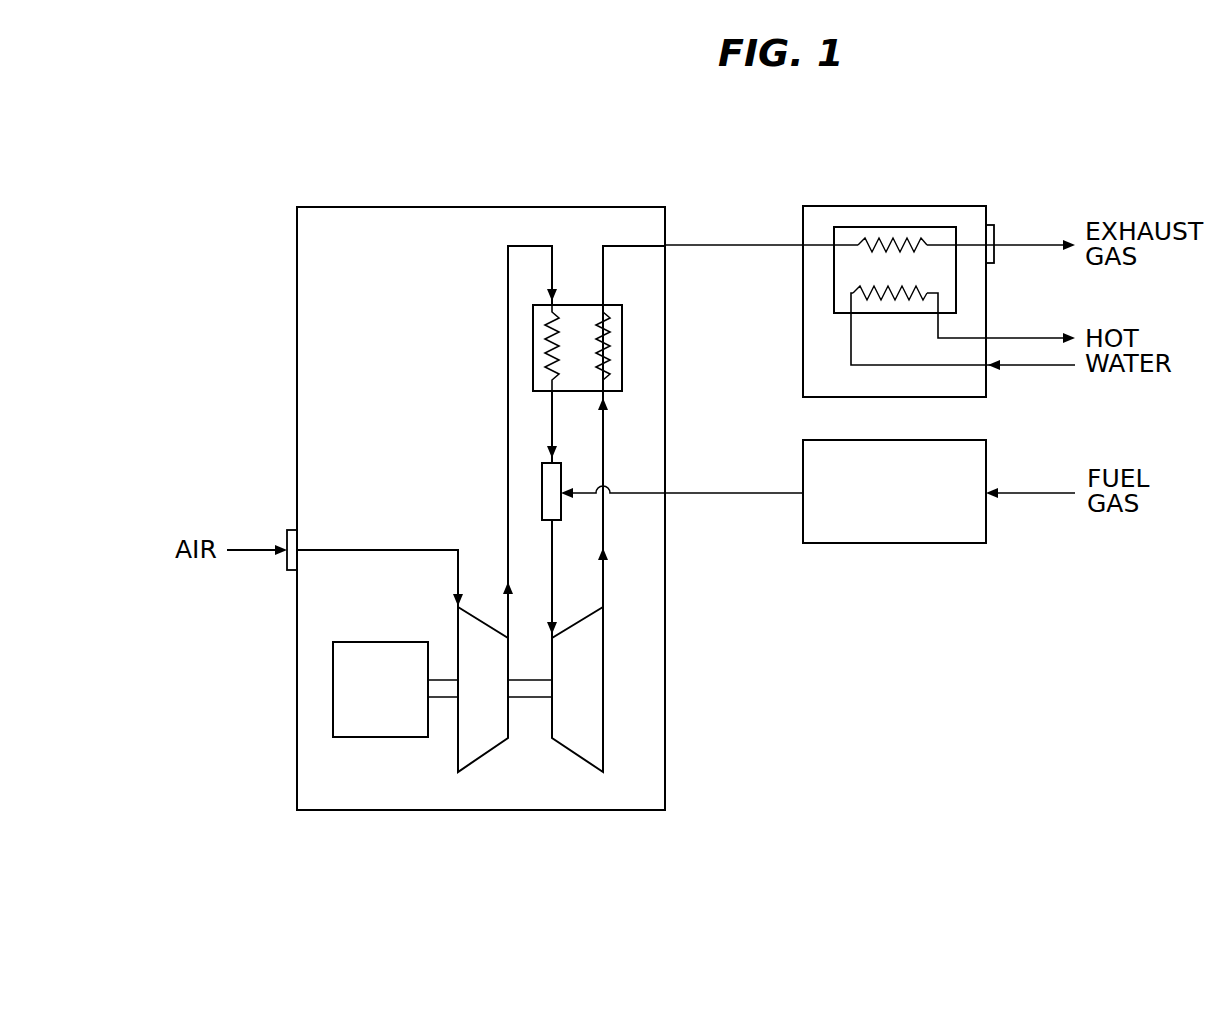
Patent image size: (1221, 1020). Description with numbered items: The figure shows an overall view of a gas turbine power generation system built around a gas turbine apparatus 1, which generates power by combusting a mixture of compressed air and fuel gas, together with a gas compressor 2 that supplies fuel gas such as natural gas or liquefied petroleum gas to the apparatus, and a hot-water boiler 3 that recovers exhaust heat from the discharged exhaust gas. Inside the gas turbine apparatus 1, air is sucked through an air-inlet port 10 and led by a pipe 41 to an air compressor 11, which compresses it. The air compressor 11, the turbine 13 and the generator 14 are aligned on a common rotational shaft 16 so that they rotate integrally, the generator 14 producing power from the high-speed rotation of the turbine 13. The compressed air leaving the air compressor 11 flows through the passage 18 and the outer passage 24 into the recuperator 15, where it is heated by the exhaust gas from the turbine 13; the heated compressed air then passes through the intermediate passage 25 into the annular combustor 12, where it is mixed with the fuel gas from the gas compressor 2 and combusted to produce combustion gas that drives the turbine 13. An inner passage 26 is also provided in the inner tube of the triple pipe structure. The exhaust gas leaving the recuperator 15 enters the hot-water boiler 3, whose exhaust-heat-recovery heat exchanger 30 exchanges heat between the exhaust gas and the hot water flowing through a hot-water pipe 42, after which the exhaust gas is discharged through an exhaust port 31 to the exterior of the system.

The gas turbine apparatus 1 is at (665, 735).
The gas compressor 2 is at (893, 543).
The hot-water boiler 3 is at (830, 206).
The air-inlet port 10 is at (287, 530).
The air compressor 11 is at (483, 757).
The annular combustor 12 is at (542, 490).
The turbine 13 is at (580, 760).
The generator 14 is at (382, 737).
The recuperator 15 is at (622, 345).
The rotational shaft 16 is at (530, 697).
The passage 18 is at (508, 398).
The outer passage 24 is at (530, 442).
The intermediate passage 25 is at (552, 412).
The inner passage 26 is at (603, 438).
The exhaust-heat-recovery heat exchanger 30 is at (940, 227).
The exhaust port 31 is at (996, 232).
The pipe 41 is at (378, 550).
The hot-water pipe 42 is at (1033, 367).